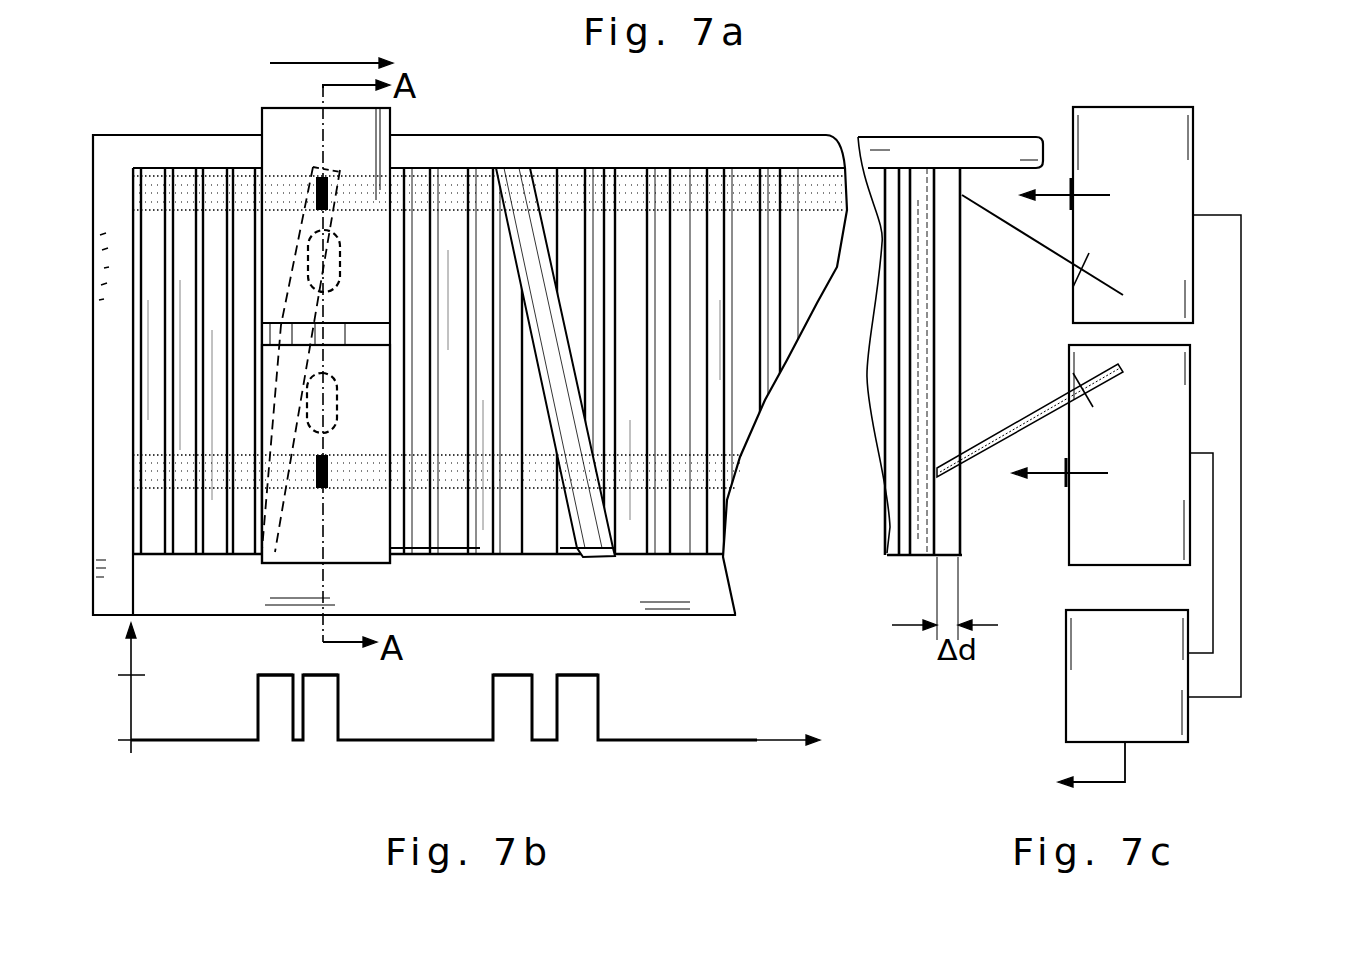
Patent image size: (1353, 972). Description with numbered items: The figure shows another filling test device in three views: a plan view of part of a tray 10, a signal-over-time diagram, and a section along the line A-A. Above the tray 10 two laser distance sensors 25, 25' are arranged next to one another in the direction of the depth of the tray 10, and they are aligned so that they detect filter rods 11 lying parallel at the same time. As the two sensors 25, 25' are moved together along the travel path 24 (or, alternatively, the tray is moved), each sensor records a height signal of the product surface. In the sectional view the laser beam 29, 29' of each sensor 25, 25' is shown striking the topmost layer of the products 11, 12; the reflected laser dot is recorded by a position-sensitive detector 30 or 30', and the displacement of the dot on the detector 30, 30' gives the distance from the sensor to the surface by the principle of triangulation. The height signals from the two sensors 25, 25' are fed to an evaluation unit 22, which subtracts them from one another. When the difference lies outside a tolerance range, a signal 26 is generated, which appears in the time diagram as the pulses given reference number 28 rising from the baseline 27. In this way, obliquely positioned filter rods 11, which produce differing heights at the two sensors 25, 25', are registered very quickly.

In FIG. 7A, the tray 10 is at (137, 157).
In FIG. 7C, the tray 10 is at (920, 153).
In FIG. 7A, the filter rods 11 is at (243, 553).
In FIG. 7C, the filter rods 11 is at (922, 543).
In FIG. 7A, the products 12 is at (485, 550).
In FIG. 7C, the evaluation unit 22 is at (1145, 697).
In FIG. 7A, the travel path 24 is at (313, 60).
In FIG. 7A, the laser distance sensor 25 is at (290, 315).
In FIG. 7C, the laser distance sensor 25 is at (1133, 182).
In FIG. 7A, the laser distance sensor 25' is at (357, 538).
In FIG. 7C, the laser distance sensor 25' is at (1094, 477).
In FIG. 7C, the signal 26 is at (1103, 782).
In FIG. 7B, the time axis / signal line 27 is at (118, 738).
In FIG. 7B, the signal 28 is at (118, 672).
In FIG. 7C, the laser beam 29 is at (1156, 156).
In FIG. 7C, the laser beam 29' is at (1178, 419).
In FIG. 7C, the detector 30 is at (1127, 222).
In FIG. 7A, the detector 30' is at (401, 311).
In FIG. 7C, the detector 30' is at (1141, 386).